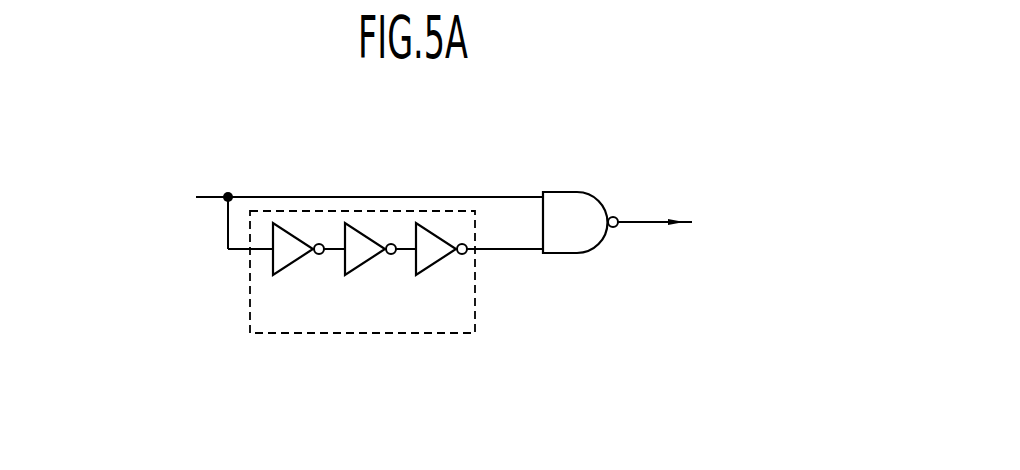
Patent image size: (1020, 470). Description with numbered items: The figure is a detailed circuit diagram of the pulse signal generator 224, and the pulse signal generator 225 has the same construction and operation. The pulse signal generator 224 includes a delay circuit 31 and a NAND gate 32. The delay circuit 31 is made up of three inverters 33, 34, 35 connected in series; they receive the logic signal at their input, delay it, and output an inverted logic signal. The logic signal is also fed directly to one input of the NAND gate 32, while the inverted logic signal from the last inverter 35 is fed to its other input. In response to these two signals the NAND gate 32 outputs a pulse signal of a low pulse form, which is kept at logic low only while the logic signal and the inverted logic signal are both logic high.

The pulse signal generator 224 is at (451, 210).
The pulse signal generator 225 is at (451, 210).
The delay circuit 31 is at (336, 274).
The NAND gate 32 is at (582, 255).
The inverter 33 is at (299, 260).
The inverter 34 is at (371, 260).
The inverter 35 is at (442, 260).